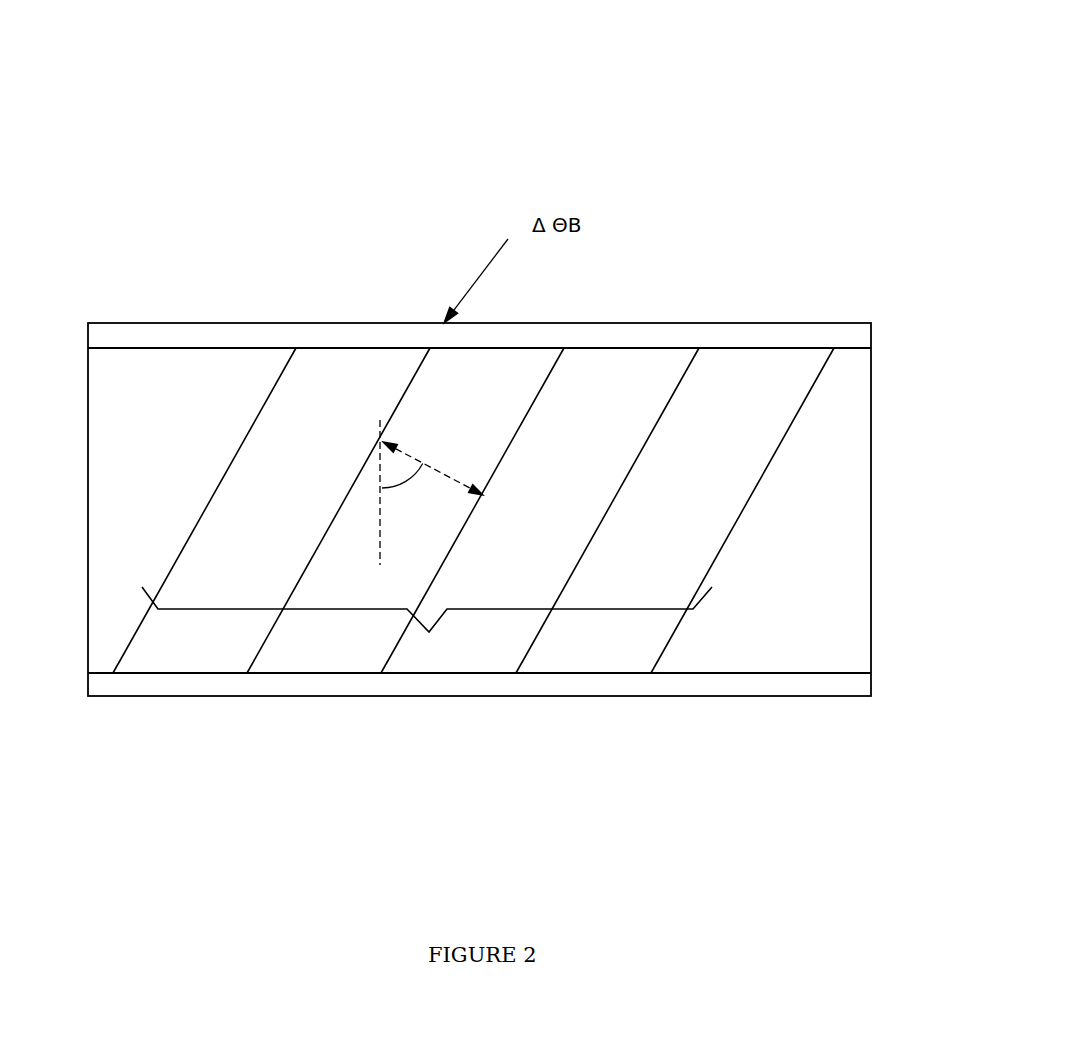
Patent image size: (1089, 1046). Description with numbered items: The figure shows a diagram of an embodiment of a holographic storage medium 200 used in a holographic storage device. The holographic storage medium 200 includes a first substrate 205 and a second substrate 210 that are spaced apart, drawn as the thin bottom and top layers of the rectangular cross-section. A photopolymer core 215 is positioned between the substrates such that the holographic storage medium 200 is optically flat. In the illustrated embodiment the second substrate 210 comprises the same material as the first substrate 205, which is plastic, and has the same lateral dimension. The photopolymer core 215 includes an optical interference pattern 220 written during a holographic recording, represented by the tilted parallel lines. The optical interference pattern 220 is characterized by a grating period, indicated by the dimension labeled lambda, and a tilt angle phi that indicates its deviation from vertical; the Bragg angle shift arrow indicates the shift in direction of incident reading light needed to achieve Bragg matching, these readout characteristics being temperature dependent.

The holographic storage medium 200 is at (983, 116).
The first substrate 205 is at (834, 713).
The second substrate 210 is at (833, 307).
The photopolymer core 215 is at (889, 479).
The optical interference pattern 220 is at (427, 623).